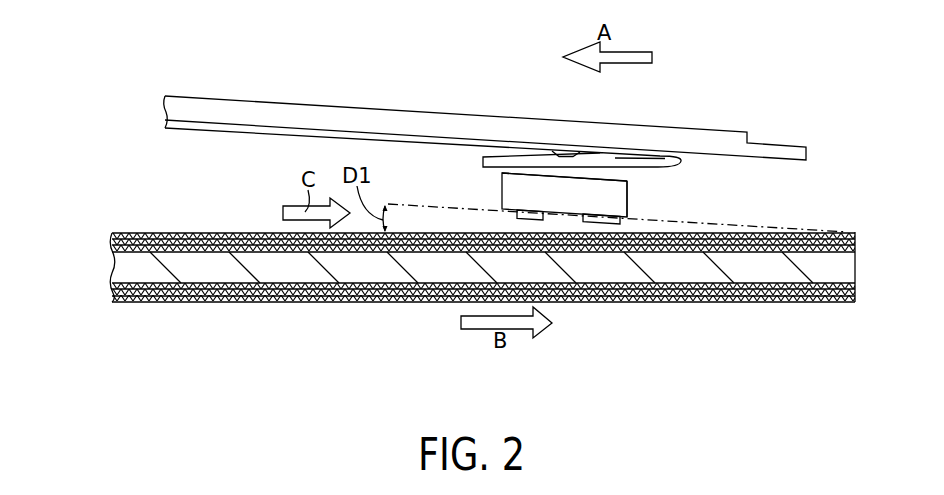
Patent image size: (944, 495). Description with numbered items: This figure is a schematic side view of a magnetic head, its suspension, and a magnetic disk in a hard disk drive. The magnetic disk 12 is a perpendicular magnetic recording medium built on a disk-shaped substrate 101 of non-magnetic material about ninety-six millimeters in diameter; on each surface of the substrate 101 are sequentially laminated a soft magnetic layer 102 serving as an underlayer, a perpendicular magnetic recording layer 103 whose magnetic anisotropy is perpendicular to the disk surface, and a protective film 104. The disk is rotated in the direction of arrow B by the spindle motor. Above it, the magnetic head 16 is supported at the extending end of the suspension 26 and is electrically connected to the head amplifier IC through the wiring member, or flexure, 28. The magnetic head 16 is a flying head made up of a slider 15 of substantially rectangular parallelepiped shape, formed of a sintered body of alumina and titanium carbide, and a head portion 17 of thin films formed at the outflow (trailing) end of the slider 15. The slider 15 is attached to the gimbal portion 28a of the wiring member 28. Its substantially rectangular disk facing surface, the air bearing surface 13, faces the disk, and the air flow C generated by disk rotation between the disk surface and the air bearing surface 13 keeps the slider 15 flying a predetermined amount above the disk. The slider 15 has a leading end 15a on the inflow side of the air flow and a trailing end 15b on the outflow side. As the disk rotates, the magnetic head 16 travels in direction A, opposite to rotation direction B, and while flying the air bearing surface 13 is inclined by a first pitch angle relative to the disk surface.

The magnetic disk 12 is at (447, 248).
The disk facing surface (air bearing surface, ABS) 13 is at (570, 229).
The slider 15 is at (571, 140).
The leading end 15a is at (502, 181).
The trailing end 15b is at (630, 194).
The magnetic head 16 is at (556, 207).
The head portion 17 is at (622, 227).
The suspension 26 is at (303, 117).
The wiring member (flexure) 28 is at (423, 136).
The gimbal portion 28a is at (531, 165).
The substrate 101 is at (228, 273).
The soft magnetic layer 102 is at (113, 252).
The perpendicular magnetic recording layer 103 is at (188, 233).
The protective film 104 is at (113, 233).